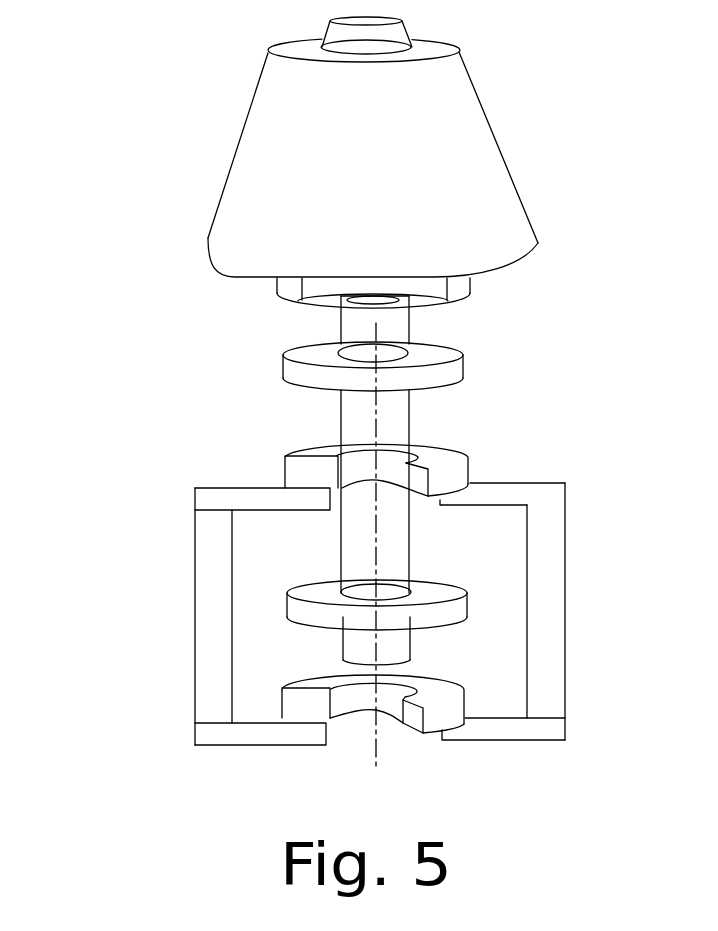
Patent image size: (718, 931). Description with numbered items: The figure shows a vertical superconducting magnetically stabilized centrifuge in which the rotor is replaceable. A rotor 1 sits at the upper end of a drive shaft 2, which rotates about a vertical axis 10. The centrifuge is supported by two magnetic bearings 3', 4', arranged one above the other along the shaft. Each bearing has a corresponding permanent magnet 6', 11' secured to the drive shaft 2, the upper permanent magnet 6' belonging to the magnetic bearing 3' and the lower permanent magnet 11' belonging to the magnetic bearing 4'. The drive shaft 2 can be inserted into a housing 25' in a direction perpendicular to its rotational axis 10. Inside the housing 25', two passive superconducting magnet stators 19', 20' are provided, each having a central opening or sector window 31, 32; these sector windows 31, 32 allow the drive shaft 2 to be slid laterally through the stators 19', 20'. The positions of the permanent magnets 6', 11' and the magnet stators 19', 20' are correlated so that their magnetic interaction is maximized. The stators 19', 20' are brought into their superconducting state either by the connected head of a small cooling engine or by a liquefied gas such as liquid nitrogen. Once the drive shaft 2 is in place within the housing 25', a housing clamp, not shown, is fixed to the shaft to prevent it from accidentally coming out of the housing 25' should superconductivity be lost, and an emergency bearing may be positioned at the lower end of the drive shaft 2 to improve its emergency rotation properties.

The rotor 1 is at (283, 188).
The drive shaft 2 is at (363, 325).
The magnetic bearing 3' is at (147, 422).
The permanent magnet 6' is at (480, 334).
The passive superconducting magnet stator 19' is at (488, 450).
The sector window 31 is at (365, 502).
The magnetic bearing 4' is at (163, 616).
The housing 25' is at (622, 611).
The permanent magnet 11' is at (488, 582).
The passive superconducting magnet stator 20' is at (500, 737).
The sector window 32 is at (372, 720).
The vertical axis 10 is at (398, 773).